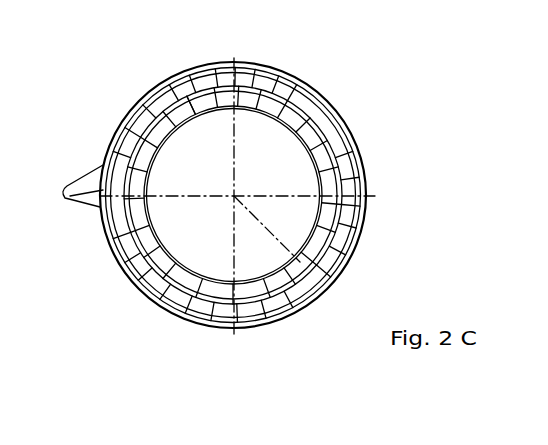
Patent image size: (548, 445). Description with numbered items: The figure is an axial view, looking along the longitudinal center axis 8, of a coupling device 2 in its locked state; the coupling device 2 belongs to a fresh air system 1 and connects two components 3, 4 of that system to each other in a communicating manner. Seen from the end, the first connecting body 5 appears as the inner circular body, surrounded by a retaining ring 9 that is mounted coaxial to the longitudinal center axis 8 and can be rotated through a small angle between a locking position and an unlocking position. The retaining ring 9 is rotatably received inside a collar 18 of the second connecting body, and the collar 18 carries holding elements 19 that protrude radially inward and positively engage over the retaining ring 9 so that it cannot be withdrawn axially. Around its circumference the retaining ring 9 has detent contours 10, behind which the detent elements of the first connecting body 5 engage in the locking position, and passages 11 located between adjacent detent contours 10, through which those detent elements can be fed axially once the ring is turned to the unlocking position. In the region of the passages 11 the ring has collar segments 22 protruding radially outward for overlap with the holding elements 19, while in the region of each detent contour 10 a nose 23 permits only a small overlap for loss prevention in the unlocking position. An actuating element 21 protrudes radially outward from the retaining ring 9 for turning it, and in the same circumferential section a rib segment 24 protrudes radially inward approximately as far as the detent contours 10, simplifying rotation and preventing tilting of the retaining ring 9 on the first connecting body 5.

The fresh air system 1 is at (427, 145).
The coupling device 2 is at (398, 182).
The component 3 is at (173, 247).
The component 4 is at (330, 96).
The first connecting body 5 is at (135, 128).
The longitudinal center axis 8 is at (340, 285).
The retaining ring 9 is at (182, 107).
The detent contour 10 is at (218, 112).
The passage 11 is at (277, 123).
The collar 18 is at (130, 105).
The holding element 19 is at (298, 90).
The actuating element 21 is at (78, 183).
The collar segment 22 is at (272, 75).
The nose 23 is at (218, 72).
The rib segment 24 is at (150, 150).